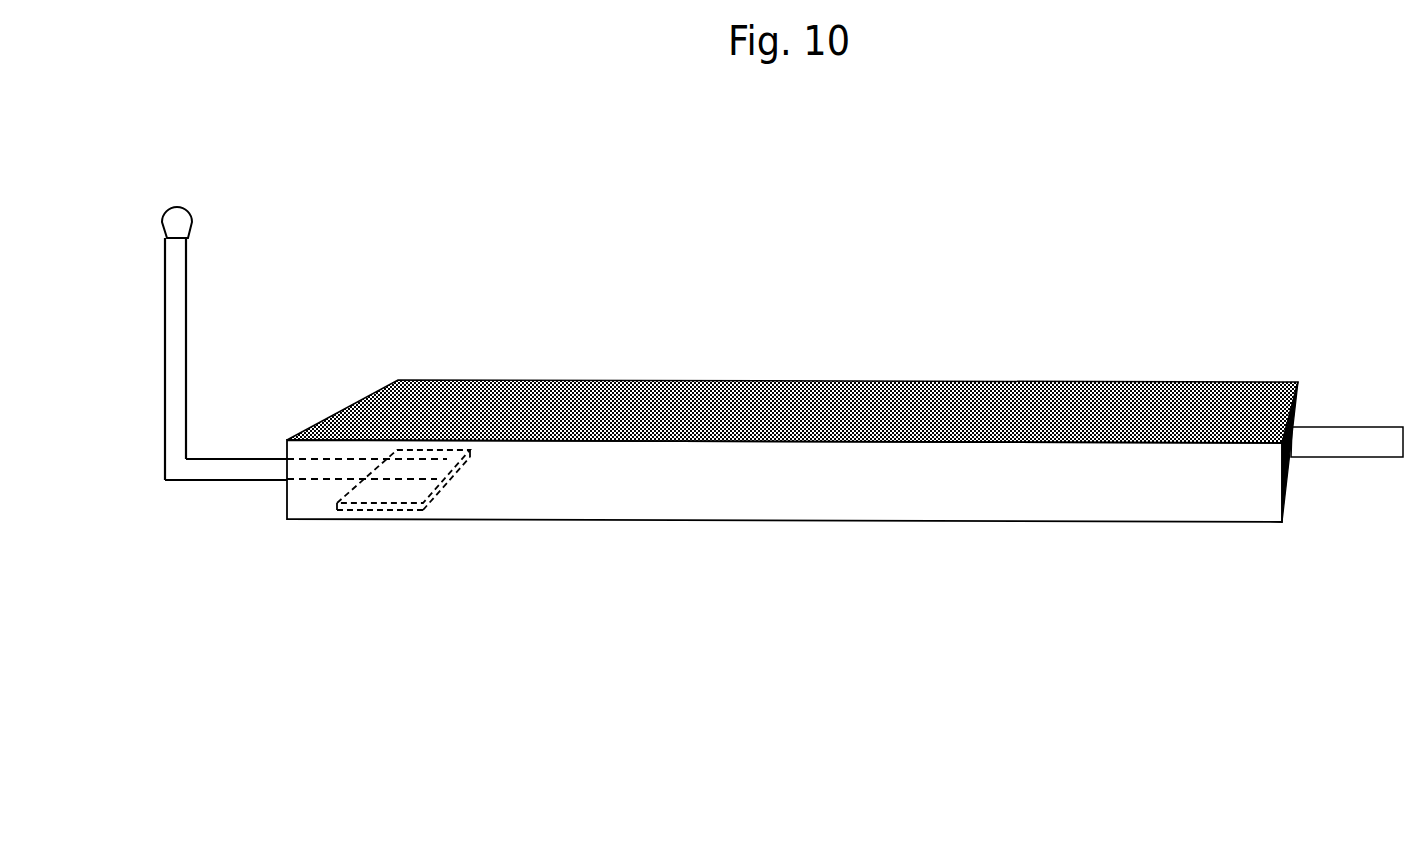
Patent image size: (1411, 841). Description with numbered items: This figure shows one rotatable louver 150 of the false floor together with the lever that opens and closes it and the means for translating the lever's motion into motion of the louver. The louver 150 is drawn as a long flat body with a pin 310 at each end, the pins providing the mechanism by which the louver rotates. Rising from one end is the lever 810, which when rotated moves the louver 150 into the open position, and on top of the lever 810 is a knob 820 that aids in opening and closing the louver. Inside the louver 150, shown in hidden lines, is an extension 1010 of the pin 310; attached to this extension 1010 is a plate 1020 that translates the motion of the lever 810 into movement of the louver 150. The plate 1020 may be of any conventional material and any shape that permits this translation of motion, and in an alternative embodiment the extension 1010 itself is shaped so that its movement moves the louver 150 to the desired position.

The rotatable louver 150 is at (657, 398).
The pin 310 is at (263, 454).
The lever 810 is at (161, 360).
The knob 820 is at (188, 200).
The extension 1010 is at (326, 481).
The plate 1020 is at (390, 509).